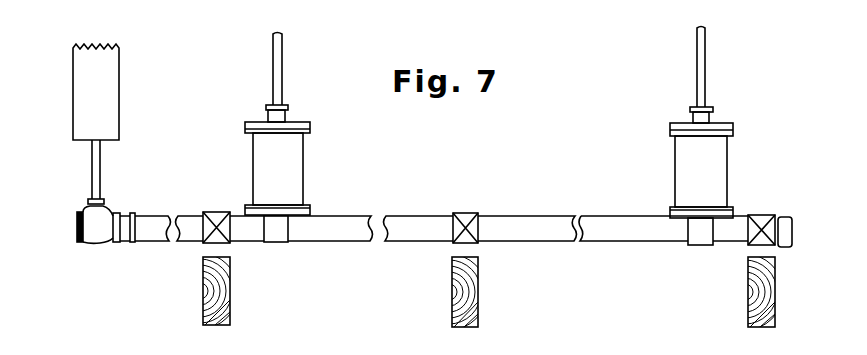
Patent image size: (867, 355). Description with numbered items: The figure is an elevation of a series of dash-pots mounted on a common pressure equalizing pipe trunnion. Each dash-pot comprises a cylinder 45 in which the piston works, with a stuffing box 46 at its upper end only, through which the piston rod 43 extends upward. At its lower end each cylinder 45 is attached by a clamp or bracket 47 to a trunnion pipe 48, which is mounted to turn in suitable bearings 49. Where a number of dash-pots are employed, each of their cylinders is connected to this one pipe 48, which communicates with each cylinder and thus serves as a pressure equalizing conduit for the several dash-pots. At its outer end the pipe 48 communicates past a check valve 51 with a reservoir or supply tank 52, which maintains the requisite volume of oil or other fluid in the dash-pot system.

The rod 43 is at (282, 73).
The cylinder 45 is at (298, 173).
The stuffing box 46 is at (288, 113).
The clamp or bracket 47 is at (285, 243).
The trunnion pipe 48 is at (552, 215).
The bearings 49 is at (223, 212).
The check valve 51 is at (95, 237).
The reservoir or supply tank 52 is at (110, 112).